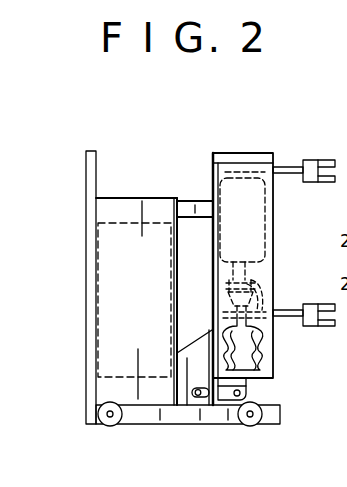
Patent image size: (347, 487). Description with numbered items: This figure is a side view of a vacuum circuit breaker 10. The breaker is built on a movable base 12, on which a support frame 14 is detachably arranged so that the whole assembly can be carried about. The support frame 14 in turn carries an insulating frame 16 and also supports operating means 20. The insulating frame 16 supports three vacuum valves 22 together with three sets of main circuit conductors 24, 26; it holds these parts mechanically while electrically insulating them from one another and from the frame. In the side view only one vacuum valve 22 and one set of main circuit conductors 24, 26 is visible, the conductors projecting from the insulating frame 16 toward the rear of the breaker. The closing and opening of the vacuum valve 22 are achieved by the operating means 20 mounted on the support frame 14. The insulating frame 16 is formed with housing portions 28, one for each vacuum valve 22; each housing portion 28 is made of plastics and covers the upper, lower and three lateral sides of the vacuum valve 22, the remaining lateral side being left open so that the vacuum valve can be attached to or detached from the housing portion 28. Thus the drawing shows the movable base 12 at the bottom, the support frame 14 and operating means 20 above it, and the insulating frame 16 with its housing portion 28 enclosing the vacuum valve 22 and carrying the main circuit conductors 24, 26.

The vacuum circuit breaker 10 is at (144, 148).
The movable base 12 is at (151, 420).
The support frame 14 is at (104, 237).
The insulating frame 16 is at (210, 282).
The operating means 20 is at (108, 326).
The vacuum valve 22 is at (266, 210).
The main circuit conductor 24 is at (291, 167).
The main circuit conductor 26 is at (289, 320).
The housing portion 28 is at (265, 272).